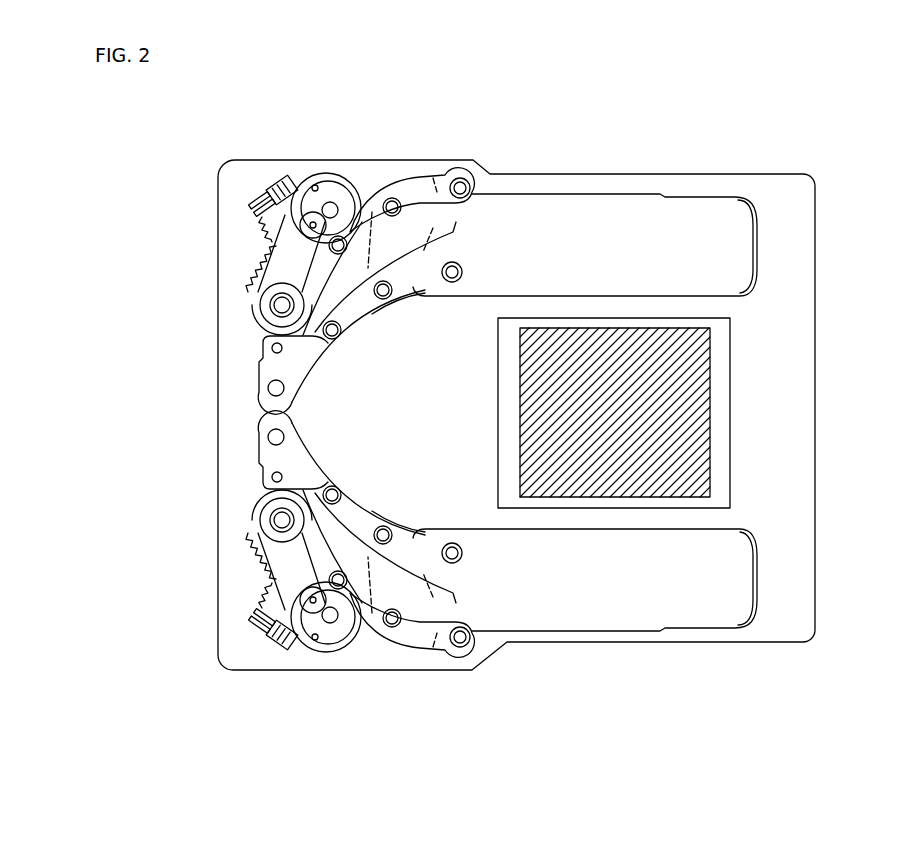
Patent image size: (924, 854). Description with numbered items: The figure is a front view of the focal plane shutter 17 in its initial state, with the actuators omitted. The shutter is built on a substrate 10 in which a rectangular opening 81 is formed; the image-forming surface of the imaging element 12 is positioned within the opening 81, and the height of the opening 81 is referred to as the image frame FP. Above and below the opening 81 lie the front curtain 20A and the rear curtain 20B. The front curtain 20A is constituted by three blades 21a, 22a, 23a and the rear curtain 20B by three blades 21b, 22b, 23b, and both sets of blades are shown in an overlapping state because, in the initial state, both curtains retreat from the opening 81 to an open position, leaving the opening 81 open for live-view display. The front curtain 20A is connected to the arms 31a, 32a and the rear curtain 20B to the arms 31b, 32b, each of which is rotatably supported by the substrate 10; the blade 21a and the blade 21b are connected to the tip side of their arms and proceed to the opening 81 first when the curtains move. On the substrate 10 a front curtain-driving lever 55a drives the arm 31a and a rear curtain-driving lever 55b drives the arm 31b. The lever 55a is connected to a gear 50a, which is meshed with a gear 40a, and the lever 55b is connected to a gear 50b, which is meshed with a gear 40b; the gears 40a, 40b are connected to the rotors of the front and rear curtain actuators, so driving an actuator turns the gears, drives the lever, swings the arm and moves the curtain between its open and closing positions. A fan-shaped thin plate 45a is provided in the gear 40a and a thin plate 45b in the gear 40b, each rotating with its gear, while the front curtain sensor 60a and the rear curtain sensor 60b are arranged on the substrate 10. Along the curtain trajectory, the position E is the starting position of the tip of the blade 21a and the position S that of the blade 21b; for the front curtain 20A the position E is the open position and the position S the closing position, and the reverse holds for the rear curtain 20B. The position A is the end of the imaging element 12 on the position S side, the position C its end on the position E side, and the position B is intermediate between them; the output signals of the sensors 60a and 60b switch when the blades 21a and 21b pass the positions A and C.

The substrate 10 is at (787, 248).
The imaging element 12 is at (712, 367).
The focal plane shutter 17 is at (835, 135).
The front curtain 20A is at (596, 199).
The rear curtain 20B is at (585, 627).
The blade 21a is at (596, 205).
The blade 22a is at (596, 205).
The blade 23a is at (708, 225).
The blade 21b is at (585, 622).
The blade 22b is at (585, 622).
The blade 23b is at (682, 600).
The arm 31a is at (440, 180).
The arm 31b is at (433, 643).
The arm 32a is at (270, 365).
The arm 32b is at (270, 460).
The gear 40a is at (268, 218).
The gear 40b is at (268, 607).
The thin plate 45a is at (296, 174).
The thin plate 45b is at (298, 653).
The gear 50a is at (243, 280).
The gear 50b is at (243, 545).
The front curtain-driving lever 55a is at (277, 242).
The rear curtain-driving lever 55b is at (277, 583).
The front curtain sensor 60a is at (262, 168).
The rear curtain sensor 60b is at (263, 665).
The opening 81 is at (722, 463).
The position E is at (470, 293).
The position C is at (730, 330).
The position B is at (730, 413).
The position A is at (730, 498).
The position S is at (470, 532).
The image frame FP is at (730, 318).